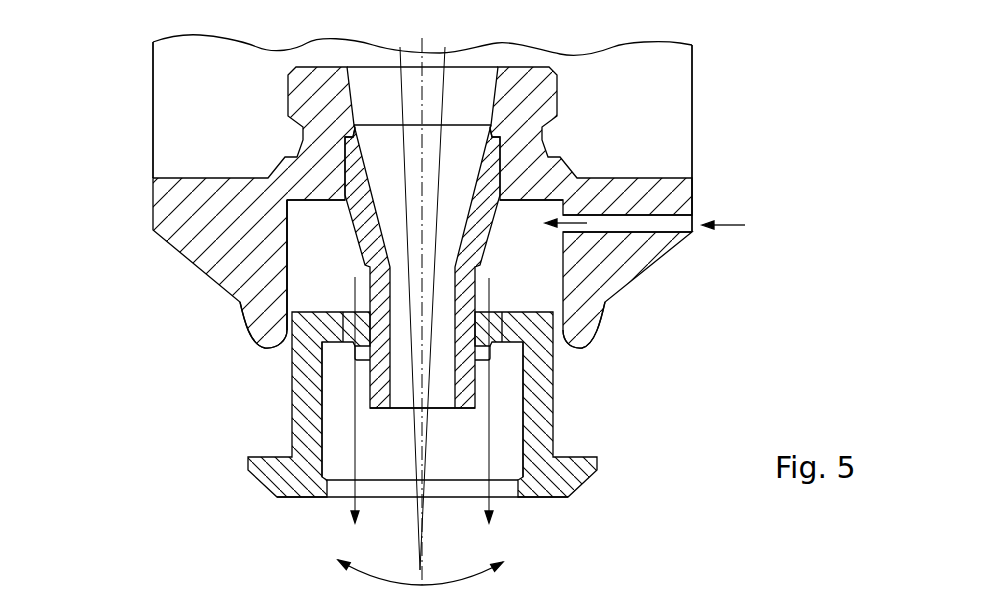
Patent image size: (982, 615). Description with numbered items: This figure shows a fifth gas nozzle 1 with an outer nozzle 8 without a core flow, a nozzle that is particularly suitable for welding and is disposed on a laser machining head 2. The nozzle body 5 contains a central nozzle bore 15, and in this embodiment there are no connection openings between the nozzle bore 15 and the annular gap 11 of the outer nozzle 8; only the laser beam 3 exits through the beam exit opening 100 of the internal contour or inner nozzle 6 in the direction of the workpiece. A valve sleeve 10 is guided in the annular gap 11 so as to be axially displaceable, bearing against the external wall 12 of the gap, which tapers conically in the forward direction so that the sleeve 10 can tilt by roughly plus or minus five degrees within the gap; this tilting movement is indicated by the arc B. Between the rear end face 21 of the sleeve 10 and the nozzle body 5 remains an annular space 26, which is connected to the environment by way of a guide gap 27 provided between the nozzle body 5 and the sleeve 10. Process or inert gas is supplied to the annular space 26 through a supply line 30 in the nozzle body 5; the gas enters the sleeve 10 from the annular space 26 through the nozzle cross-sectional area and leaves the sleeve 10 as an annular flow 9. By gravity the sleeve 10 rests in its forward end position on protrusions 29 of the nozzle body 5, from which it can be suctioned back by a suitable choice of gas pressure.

The gas nozzle 1 is at (130, 133).
The laser machining head 2 is at (647, 84).
The laser beam 3 is at (423, 537).
The nozzle body 5 is at (583, 168).
The inner nozzle 6 is at (397, 423).
The outer nozzle 8 is at (345, 378).
The annular flow 9 is at (487, 417).
The valve sleeve 10 is at (307, 427).
The annular gap 11 is at (297, 228).
The external wall 12 is at (296, 250).
The nozzle bore 15 is at (453, 118).
The rear end face 21 is at (322, 293).
The annular space 26 is at (297, 228).
The guide gap 27 is at (558, 325).
The protrusions 29 is at (352, 350).
The supply line 30 is at (643, 225).
The beam exit opening 100 is at (523, 374).
The oscillation B is at (448, 583).